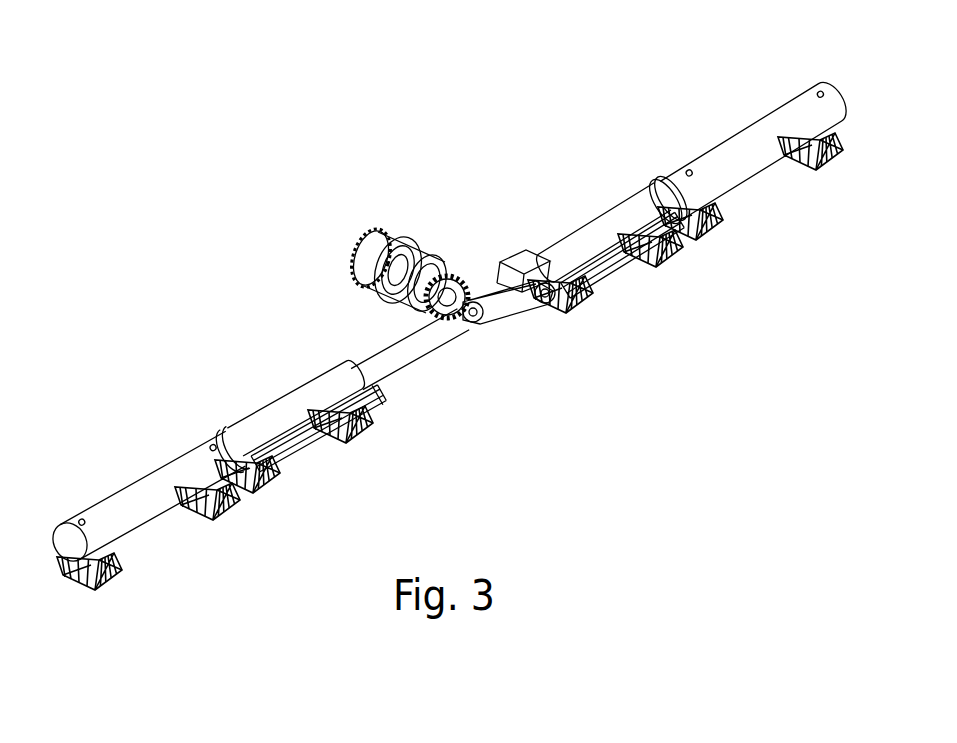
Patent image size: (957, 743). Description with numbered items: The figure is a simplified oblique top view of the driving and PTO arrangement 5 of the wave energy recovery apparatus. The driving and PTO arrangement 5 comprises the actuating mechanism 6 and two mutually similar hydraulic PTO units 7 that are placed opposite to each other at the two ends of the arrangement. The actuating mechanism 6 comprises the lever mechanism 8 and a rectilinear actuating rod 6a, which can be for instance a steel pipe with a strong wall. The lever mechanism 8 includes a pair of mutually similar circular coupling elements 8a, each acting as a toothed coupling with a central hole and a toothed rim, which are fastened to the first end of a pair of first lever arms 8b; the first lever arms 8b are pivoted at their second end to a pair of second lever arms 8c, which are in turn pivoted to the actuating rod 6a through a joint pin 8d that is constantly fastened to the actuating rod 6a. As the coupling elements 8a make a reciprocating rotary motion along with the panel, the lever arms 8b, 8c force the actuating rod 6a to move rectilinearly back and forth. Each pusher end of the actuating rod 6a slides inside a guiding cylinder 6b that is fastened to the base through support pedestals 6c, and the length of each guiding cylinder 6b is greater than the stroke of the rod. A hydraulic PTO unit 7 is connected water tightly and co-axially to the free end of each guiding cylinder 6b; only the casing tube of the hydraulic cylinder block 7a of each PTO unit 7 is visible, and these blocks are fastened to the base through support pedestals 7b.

The driving and PTO arrangement 5 is at (308, 178).
The actuating mechanism 6 is at (465, 208).
The actuating rod 6a is at (377, 362).
The guiding cylinder 6b is at (612, 216).
The support pedestal 6c is at (372, 437).
The hydraulic PTO unit 7 is at (714, 100).
The casing tube of the hydraulic cylinder block 7a is at (795, 112).
The support pedestal 7b is at (842, 152).
The lever mechanism 8 is at (494, 334).
The circular coupling element 8a is at (385, 232).
The first lever arm 8b is at (455, 330).
The second lever arm 8c is at (498, 272).
The joint pin 8d is at (546, 305).